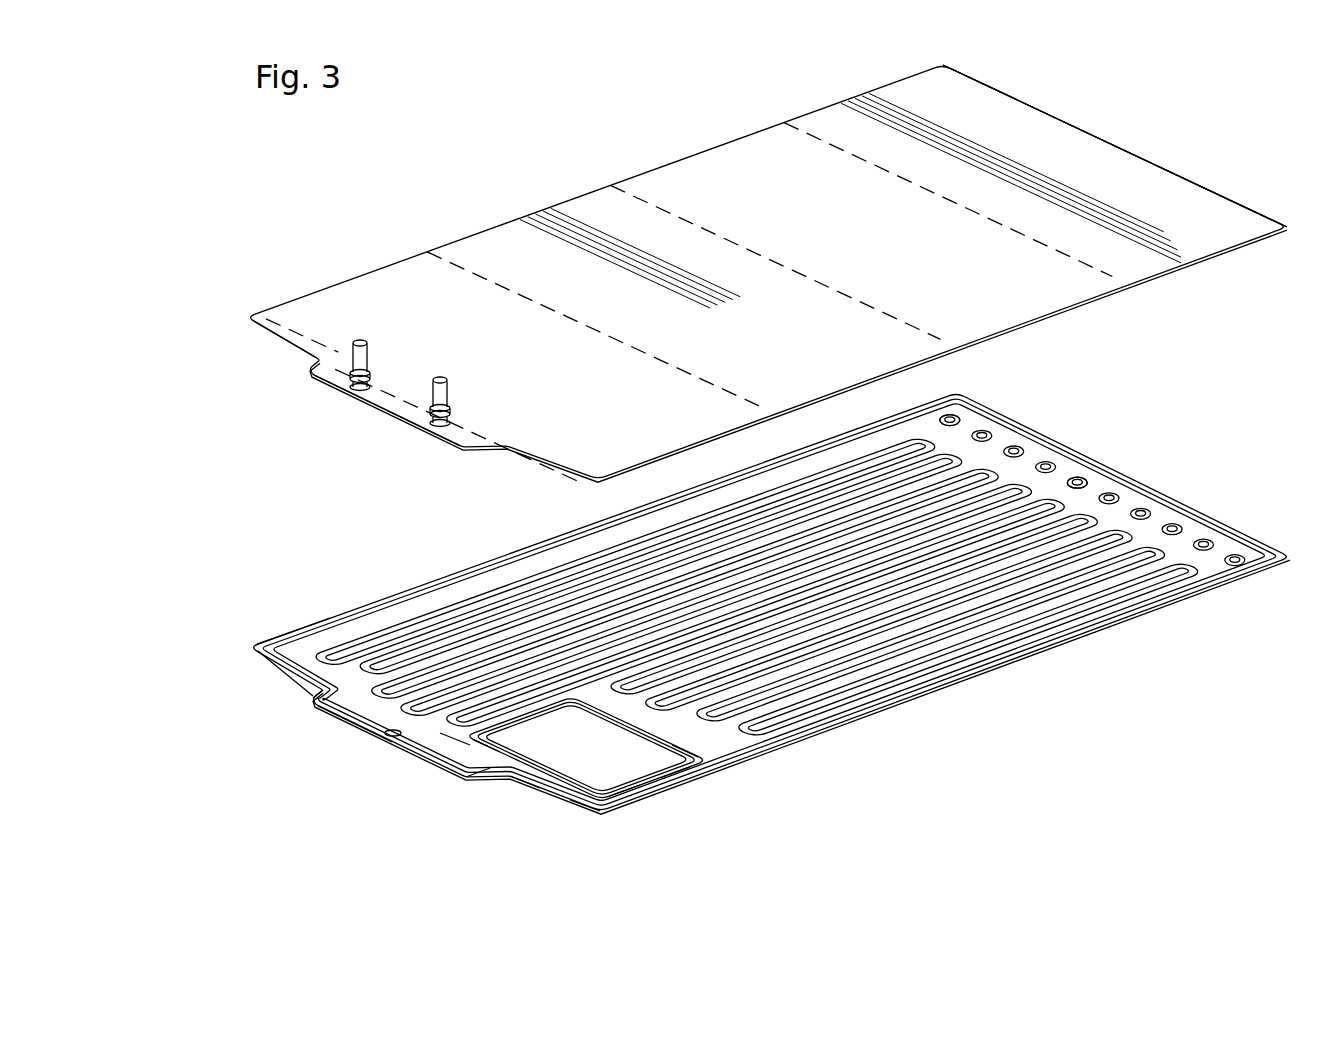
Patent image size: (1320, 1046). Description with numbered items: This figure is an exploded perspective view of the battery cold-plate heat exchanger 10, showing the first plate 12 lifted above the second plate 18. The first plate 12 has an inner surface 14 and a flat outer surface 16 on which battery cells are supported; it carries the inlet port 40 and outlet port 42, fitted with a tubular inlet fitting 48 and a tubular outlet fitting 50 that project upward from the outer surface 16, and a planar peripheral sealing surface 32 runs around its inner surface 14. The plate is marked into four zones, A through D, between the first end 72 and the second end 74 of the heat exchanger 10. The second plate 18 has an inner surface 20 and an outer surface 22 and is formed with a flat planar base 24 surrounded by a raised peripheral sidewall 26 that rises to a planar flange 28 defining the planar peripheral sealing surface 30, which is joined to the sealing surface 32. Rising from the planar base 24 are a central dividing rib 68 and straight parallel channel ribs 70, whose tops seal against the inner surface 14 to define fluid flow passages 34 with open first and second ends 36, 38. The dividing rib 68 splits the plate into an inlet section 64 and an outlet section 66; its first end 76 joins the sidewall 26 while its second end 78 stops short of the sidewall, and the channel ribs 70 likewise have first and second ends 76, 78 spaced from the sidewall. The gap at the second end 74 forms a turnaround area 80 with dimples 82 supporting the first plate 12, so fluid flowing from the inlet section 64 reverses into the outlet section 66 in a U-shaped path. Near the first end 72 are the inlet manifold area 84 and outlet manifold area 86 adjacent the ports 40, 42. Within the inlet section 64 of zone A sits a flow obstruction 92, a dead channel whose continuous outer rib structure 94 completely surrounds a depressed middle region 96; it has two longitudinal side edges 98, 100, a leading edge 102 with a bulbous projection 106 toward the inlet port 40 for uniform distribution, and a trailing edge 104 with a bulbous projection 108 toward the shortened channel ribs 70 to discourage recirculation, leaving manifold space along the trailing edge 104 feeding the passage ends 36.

The heat exchanger 10 is at (243, 188).
The first plate 12 is at (1103, 123).
The inner surface of first plate 14 is at (1213, 262).
The outer surface of first plate 16 is at (1228, 197).
The second plate 18 is at (1162, 488).
The inner surface of second plate 20 is at (1028, 445).
The outer surface of second plate 22 is at (965, 683).
The planar base 24 is at (380, 625).
The peripheral sidewall 26 is at (458, 577).
The planar flange 28 is at (268, 591).
The planar peripheral sealing surface 30 is at (280, 630).
The peripheral sealing surface of first plate 32 is at (276, 342).
The fluid flow passages 34 is at (637, 637).
The first ends of fluid flow passages 36 is at (325, 688).
The second ends of fluid flow passages 38 is at (968, 463).
The inlet port 40 is at (442, 430).
The outlet port 42 is at (358, 400).
The tubular inlet fitting 48 is at (446, 390).
The tubular outlet fitting 50 is at (366, 352).
The inlet section 64 is at (797, 667).
The outlet section 66 is at (720, 560).
The dividing rib 68 is at (447, 730).
The channel ribs 70 is at (905, 525).
The first end of heat exchanger 72 is at (393, 420).
The second end of heat exchanger 74 is at (1155, 150).
The first ends of ribs 76 is at (300, 666).
The second ends of ribs 78 is at (1168, 540).
The turnaround area 80 is at (972, 425).
The dimples 82 is at (1070, 477).
The inlet manifold area 84 is at (470, 770).
The outlet manifold area 86 is at (345, 708).
The flow obstruction 92 is at (585, 765).
The continuous outer rib structure 94 is at (627, 775).
The depressed middle region 96 is at (555, 756).
The side edge of flow obstruction 98 is at (660, 767).
The side edge of flow obstruction 100 is at (510, 713).
The leading edge 102 is at (530, 770).
The trailing edge 104 is at (520, 620).
The bulbous projection on leading edge 106 is at (460, 765).
The bulbous projection on trailing edge 108 is at (672, 745).